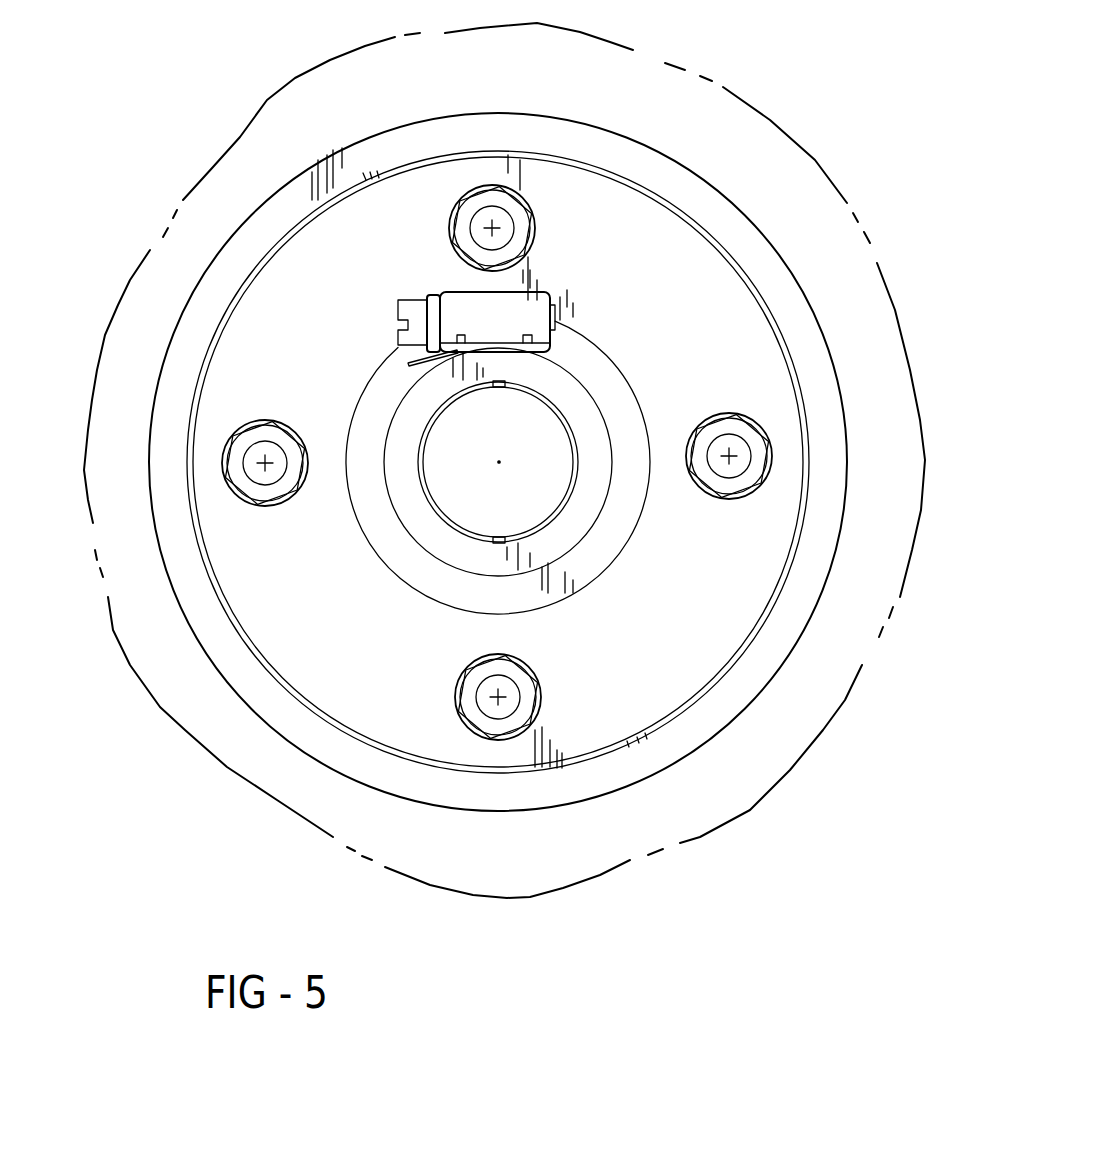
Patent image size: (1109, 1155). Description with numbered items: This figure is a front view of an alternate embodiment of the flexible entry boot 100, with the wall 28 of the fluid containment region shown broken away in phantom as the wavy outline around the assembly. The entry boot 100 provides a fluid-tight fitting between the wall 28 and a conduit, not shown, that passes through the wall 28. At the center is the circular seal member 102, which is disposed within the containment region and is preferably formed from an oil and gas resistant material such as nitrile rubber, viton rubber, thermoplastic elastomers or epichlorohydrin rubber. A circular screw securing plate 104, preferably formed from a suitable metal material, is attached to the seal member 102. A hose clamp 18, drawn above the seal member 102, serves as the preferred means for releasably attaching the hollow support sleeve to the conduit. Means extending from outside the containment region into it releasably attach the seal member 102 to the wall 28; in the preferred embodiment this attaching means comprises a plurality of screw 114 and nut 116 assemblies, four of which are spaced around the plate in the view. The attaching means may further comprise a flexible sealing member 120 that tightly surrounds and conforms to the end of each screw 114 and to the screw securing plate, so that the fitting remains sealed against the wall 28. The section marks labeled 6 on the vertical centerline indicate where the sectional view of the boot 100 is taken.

The wall 28 is at (630, 48).
The flexible entry boot 100 is at (532, 468).
The flexible sealing member 120 is at (747, 708).
The screw securing plate 104 is at (360, 723).
The seal member 102 is at (610, 377).
The hose clamp 18 is at (540, 293).
The screw 114 is at (737, 445).
The nut 116 is at (765, 473).
The section line 6- 6 is at (478, 75).